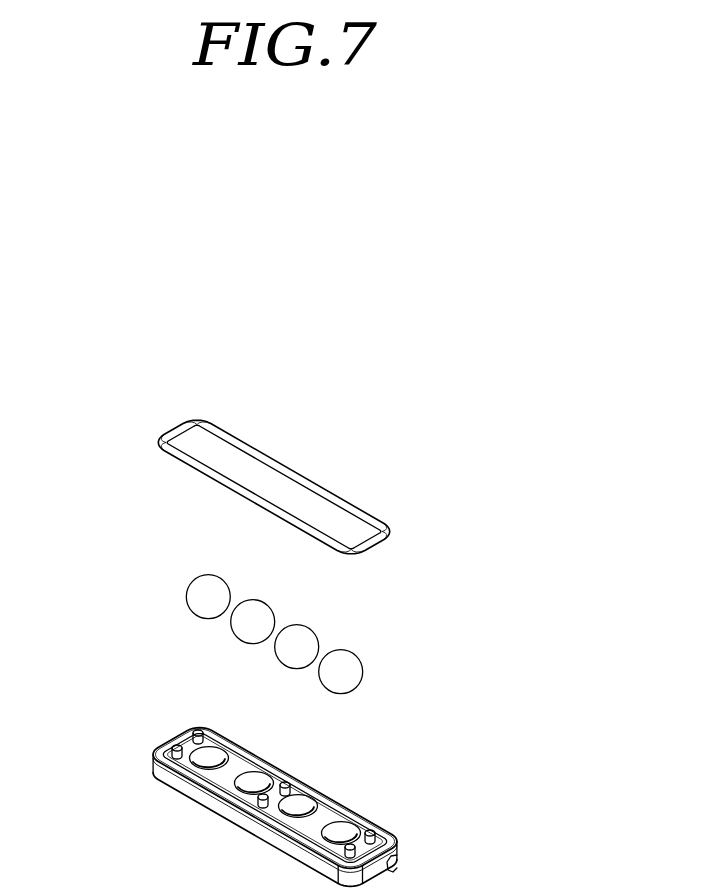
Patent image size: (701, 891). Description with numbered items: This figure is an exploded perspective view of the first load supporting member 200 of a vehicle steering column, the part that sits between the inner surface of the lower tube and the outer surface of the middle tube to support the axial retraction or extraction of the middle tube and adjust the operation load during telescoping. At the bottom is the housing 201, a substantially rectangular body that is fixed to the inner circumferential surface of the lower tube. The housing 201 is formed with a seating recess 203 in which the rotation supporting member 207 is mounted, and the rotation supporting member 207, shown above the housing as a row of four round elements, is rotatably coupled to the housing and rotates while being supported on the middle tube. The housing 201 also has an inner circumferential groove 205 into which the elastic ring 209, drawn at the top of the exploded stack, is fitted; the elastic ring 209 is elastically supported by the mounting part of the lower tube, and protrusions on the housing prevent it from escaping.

The first load supporting member 200 is at (64, 316).
The housing 201 is at (198, 796).
The seating recess 203 is at (303, 800).
The inner circumferential groove 205 is at (322, 838).
The rotation supporting member 207 is at (400, 631).
The elastic ring 209 is at (342, 441).